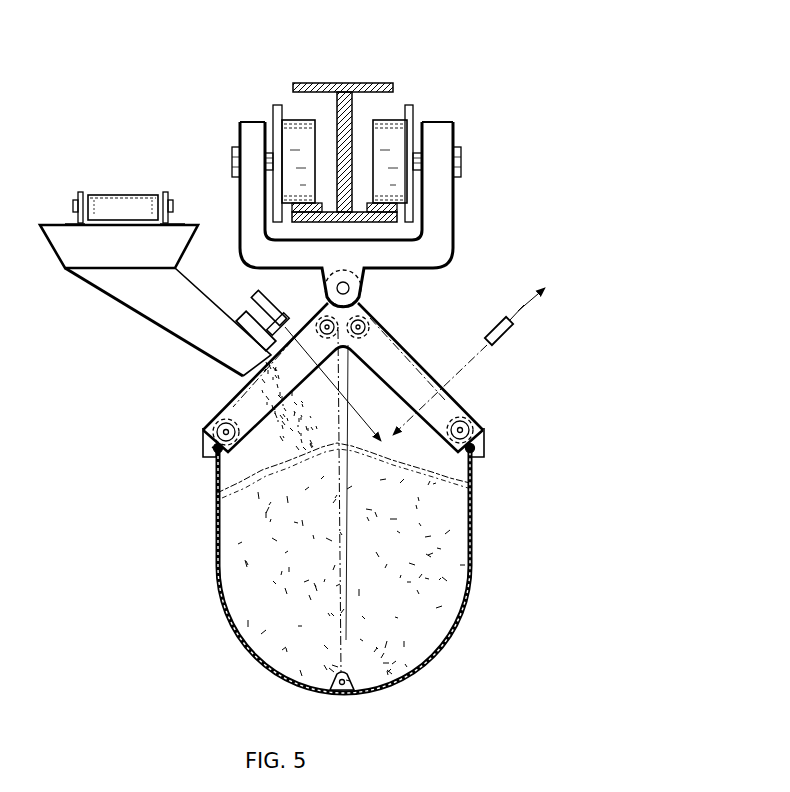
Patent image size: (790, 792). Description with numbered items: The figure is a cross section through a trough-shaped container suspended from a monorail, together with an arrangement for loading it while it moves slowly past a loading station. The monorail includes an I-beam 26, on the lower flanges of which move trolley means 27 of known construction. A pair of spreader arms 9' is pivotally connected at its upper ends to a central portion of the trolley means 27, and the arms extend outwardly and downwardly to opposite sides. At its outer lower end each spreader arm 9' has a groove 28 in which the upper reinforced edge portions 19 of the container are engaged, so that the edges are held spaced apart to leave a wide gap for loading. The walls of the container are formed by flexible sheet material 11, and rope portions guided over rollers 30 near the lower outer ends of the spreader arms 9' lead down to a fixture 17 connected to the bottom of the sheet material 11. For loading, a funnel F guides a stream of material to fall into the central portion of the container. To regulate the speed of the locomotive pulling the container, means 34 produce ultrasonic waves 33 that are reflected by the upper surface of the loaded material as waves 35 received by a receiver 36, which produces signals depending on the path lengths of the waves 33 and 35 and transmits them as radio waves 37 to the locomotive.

The funnel F is at (132, 305).
The spreader arms 9' is at (336, 377).
The flexible sheet material 11 is at (473, 568).
The fixture 17 is at (350, 678).
The upper reinforced edge portions 19 is at (477, 465).
The I-beam 26 is at (370, 83).
The trolley means 27 is at (402, 130).
The groove 28 is at (485, 453).
The rollers 30 is at (367, 327).
The ultrasonic waves 33 is at (348, 413).
The means for producing ultrasonic waves 34 is at (262, 300).
The reflected waves 35 is at (450, 378).
The receiver 36 is at (508, 332).
The radio waves 37 is at (541, 286).